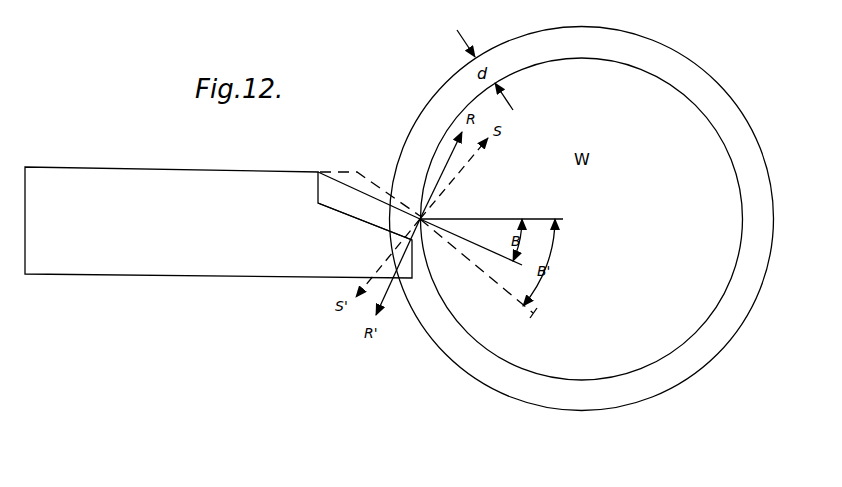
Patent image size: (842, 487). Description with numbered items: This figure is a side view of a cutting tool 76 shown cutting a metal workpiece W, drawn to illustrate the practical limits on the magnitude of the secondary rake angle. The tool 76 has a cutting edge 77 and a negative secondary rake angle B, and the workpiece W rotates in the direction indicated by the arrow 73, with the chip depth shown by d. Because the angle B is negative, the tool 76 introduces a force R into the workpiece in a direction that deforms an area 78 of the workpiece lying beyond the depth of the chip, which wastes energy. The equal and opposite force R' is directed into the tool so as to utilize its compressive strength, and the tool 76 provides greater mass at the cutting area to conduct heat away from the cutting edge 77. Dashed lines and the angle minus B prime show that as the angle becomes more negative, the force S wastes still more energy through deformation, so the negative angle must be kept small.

The tool 76 is at (181, 165).
The cutting edge 77 is at (349, 183).
The area of the workpiece 78 is at (440, 143).
The arrow 73 is at (588, 85).